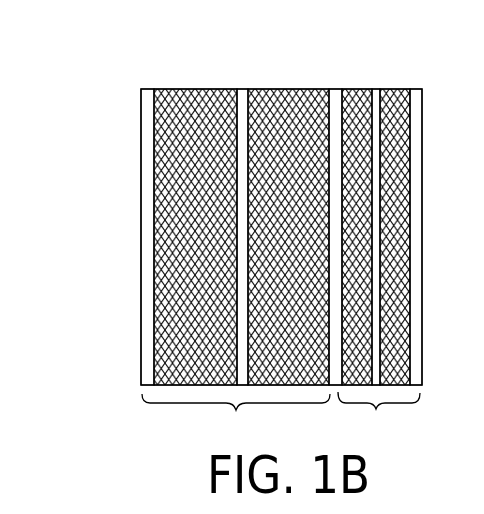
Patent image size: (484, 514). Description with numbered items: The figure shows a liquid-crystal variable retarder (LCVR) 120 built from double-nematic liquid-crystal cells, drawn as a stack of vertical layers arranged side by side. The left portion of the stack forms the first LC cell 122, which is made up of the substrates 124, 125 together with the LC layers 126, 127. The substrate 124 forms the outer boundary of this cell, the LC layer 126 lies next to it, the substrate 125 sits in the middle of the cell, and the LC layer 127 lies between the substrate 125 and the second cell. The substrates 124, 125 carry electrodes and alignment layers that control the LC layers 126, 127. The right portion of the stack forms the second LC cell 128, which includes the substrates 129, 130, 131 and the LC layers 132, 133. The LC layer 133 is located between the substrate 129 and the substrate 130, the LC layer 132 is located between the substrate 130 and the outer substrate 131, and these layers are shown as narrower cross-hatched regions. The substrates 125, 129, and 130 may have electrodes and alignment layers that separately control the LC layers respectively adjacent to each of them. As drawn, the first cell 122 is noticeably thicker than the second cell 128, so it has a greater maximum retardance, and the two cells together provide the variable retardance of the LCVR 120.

The liquid-crystal variable retarder 120 is at (122, 201).
The first LC cell 122 is at (236, 410).
The substrate 124 is at (146, 89).
The substrate 125 is at (240, 89).
The LC layer 126 is at (187, 89).
The LC layer 127 is at (292, 89).
The second LC cell 128 is at (376, 409).
The substrate 129 is at (335, 89).
The substrate 130 is at (377, 89).
The substrate 131 is at (415, 89).
The LC layer 132 is at (358, 89).
The LC layer 133 is at (398, 89).